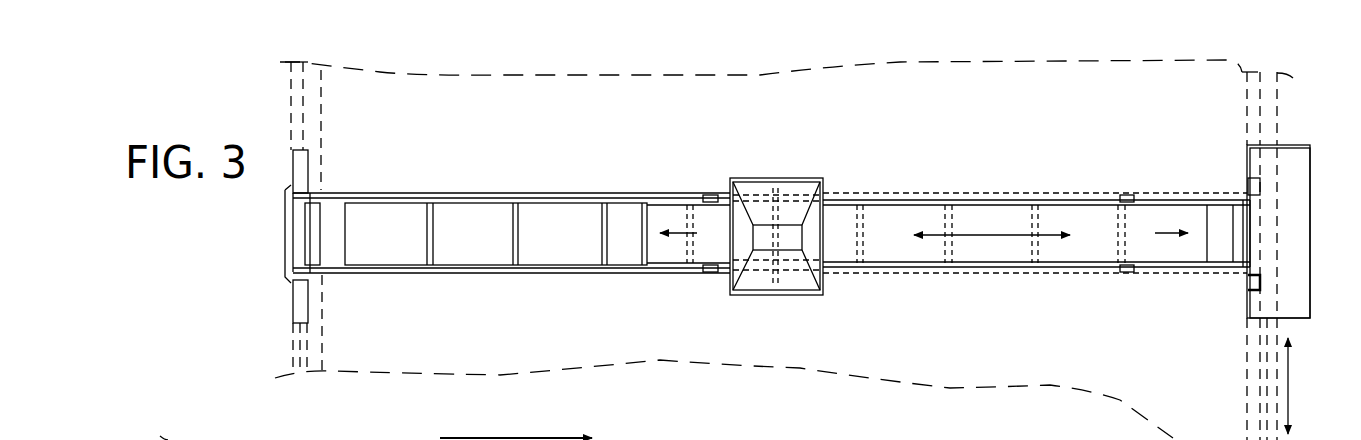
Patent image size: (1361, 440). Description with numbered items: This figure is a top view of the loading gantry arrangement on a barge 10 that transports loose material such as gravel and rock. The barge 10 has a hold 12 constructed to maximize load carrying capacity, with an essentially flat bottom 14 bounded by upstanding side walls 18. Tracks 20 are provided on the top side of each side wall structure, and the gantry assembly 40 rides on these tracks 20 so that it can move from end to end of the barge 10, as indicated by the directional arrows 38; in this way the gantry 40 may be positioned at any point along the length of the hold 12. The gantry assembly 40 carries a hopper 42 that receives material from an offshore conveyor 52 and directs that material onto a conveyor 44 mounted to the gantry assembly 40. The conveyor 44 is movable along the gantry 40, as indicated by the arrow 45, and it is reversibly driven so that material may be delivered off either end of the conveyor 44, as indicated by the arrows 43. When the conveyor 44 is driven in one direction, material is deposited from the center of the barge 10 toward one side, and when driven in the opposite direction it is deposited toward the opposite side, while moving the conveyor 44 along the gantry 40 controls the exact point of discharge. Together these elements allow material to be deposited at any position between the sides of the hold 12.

The barge 10 is at (1288, 108).
The hold 12 is at (449, 98).
The flat bottom 14 is at (933, 349).
The side walls 18 is at (322, 333).
The tracks 20 is at (1260, 413).
The directional arrows 38 is at (1290, 370).
The gantry assembly 40 is at (1072, 195).
The hopper 42 is at (750, 178).
The arrows 43 is at (677, 233).
The conveyor 44 is at (888, 217).
The arrow 45 is at (993, 235).
The offshore conveyor 52 is at (400, 439).